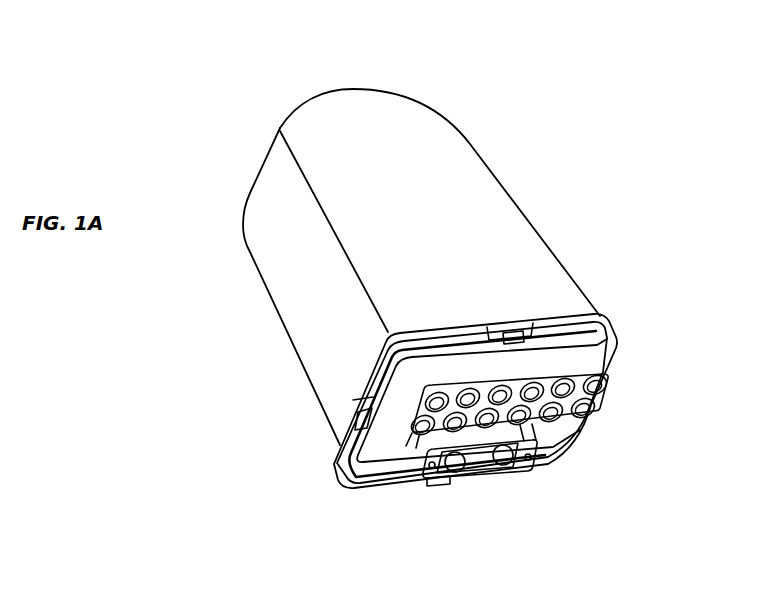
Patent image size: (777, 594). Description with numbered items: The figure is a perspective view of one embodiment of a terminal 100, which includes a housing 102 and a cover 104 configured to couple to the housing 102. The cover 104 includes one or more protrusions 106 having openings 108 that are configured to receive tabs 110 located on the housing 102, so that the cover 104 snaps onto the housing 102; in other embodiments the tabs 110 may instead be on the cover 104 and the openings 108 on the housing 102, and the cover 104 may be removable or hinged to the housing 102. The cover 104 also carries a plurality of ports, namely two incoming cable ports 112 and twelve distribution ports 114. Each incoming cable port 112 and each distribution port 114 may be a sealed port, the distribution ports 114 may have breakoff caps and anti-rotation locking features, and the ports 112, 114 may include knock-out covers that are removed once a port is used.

The terminal 100 is at (229, 59).
The housing 102 is at (407, 127).
The cover 104 is at (603, 338).
The protrusions 106 is at (519, 332).
The openings 108 is at (531, 337).
The tabs 110 is at (513, 335).
The incoming cable ports 112 is at (460, 483).
The distribution ports 114 is at (538, 415).